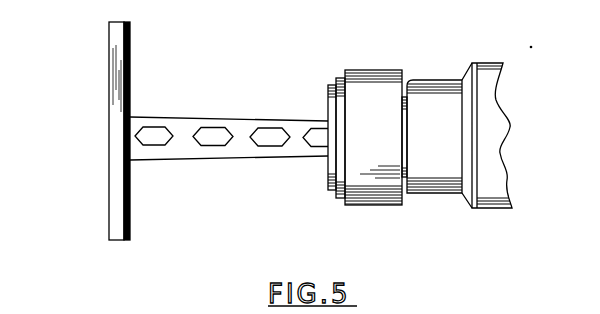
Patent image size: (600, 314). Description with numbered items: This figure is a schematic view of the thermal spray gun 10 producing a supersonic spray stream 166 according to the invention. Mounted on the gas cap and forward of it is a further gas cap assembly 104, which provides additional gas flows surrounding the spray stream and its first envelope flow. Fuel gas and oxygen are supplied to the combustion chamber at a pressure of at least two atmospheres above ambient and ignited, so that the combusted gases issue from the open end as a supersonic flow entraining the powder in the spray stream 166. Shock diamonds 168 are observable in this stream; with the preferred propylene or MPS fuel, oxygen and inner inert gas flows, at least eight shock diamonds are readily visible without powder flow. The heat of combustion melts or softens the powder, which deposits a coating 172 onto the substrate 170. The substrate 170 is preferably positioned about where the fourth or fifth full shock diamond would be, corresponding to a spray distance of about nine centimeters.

The thermal spray gun 10 is at (450, 62).
The further gas cap assembly 104 is at (383, 220).
The supersonic spray stream 166 is at (262, 157).
The shock diamonds 168 is at (308, 138).
The substrate 170 is at (110, 89).
The coating 172 is at (129, 68).